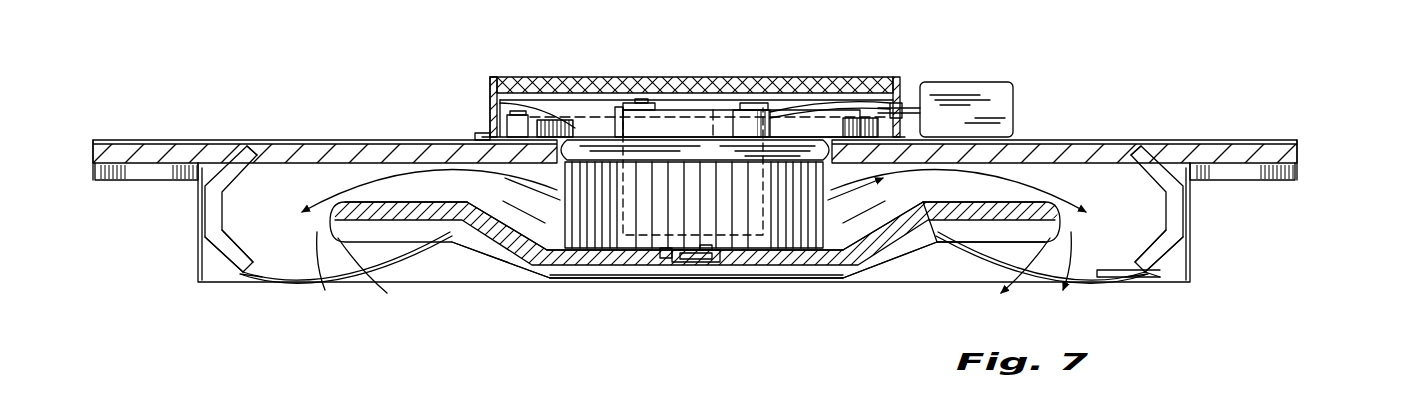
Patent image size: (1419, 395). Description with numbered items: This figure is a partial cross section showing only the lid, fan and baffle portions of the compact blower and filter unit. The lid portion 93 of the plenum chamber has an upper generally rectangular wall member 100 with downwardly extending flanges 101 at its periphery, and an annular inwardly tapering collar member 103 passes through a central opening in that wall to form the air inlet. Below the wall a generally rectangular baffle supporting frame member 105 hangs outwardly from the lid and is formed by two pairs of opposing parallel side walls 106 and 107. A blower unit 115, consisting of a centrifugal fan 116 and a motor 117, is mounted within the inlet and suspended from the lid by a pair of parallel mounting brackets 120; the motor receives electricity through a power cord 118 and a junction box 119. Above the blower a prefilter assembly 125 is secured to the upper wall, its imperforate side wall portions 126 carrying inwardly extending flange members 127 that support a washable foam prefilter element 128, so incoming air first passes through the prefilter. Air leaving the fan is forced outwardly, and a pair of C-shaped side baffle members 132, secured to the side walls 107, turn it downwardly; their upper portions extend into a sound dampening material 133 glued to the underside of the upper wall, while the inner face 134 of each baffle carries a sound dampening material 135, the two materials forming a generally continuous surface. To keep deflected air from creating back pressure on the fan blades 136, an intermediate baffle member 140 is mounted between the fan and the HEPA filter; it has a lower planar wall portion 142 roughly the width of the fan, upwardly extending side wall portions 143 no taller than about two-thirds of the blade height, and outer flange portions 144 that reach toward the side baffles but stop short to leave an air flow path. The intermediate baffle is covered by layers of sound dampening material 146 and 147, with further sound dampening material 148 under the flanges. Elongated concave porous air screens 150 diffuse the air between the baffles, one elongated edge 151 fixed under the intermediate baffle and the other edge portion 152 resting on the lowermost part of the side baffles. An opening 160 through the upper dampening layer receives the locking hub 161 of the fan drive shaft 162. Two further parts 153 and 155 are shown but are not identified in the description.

The lid portion 93 is at (1300, 144).
The upper wall member 100 is at (1222, 140).
The downwardly extending flanges 101 is at (163, 176).
The collar member 103 is at (805, 150).
The baffle supporting frame member 105 is at (196, 263).
The side walls 106 is at (199, 231).
The side walls 107 is at (1120, 278).
The blower unit 115 is at (636, 124).
The centrifugal fan 116 is at (641, 253).
The motor 117 is at (680, 122).
The power cord 118 is at (855, 108).
The junction box 119 is at (1013, 93).
The mounting brackets 120 is at (497, 108).
The prefilter assembly 125 is at (488, 72).
The imperforate side wall portions 126 is at (490, 82).
The inwardly extending flange members 127 is at (500, 77).
The prefilter element 128 is at (563, 82).
The side baffle members 132 is at (223, 262).
The sound dampening material 133 is at (317, 148).
The inner face 134 is at (213, 190).
The sound dampening material 135 is at (247, 274).
The fan blades 136 is at (836, 190).
The intermediate baffle member 140 is at (515, 263).
The lower planar wall portion 142 is at (780, 271).
The upwardly extending side wall portions 143 is at (870, 256).
The outer flange portions 144 is at (905, 229).
The sound dampening material 146 is at (435, 203).
The sound dampening material 147 is at (370, 213).
The sound dampening material 148 is at (392, 236).
The porous air screens 150 is at (312, 281).
The elongated edge 151 is at (940, 241).
The edge portion 152 is at (1161, 266).
The curved panel 153 is at (1000, 273).
The seal 155 is at (481, 134).
The opening 160 is at (700, 263).
The locking hub 161 is at (666, 256).
The fan drive shaft 162 is at (688, 263).